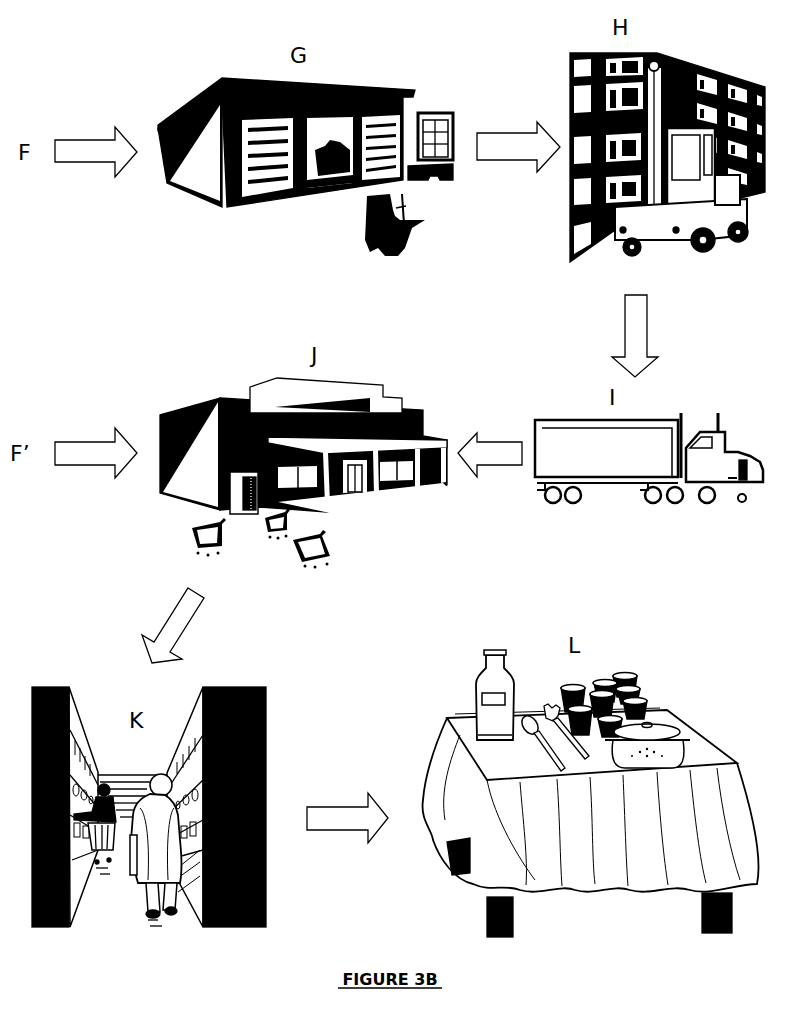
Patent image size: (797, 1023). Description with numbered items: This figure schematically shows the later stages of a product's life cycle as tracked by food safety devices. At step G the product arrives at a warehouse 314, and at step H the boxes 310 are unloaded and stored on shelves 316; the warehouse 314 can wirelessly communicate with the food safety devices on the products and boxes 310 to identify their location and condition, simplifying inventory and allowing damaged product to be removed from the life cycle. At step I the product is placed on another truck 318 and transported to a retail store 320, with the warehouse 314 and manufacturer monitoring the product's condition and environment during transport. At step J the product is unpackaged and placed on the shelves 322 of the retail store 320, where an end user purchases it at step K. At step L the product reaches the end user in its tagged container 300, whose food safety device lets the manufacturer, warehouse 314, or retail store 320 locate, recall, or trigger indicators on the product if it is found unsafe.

The tagged container 300 is at (478, 675).
The boxes 310 is at (742, 80).
The warehouse 314 is at (196, 97).
The shelves 316 is at (570, 67).
The truck 318 is at (597, 461).
The retail store 320 is at (193, 403).
The shelves 322 is at (48, 687).